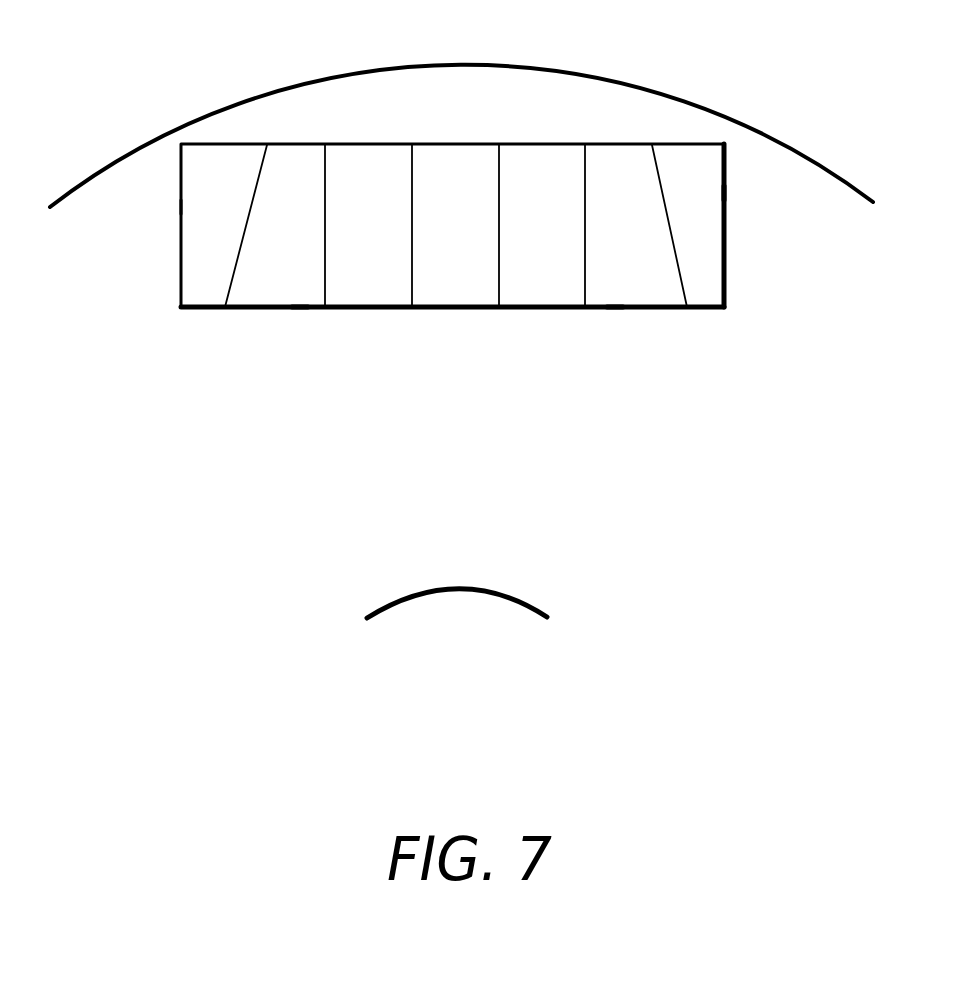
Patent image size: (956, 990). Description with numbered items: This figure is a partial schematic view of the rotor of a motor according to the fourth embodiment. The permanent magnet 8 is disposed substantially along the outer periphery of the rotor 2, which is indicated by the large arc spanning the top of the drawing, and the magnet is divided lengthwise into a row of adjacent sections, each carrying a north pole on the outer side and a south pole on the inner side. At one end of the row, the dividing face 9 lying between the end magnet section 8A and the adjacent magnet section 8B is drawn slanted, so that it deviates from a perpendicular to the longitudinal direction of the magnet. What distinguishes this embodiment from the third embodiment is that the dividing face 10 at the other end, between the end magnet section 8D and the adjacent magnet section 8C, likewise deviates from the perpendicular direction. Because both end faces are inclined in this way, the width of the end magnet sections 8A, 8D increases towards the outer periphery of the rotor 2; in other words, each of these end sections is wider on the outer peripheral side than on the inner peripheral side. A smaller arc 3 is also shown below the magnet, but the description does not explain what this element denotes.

The rotor 2 is at (352, 75).
The permanent magnet 8 is at (448, 144).
The magnet section 8A is at (181, 207).
The magnet section 8B is at (300, 308).
The magnet section 8C is at (615, 308).
The magnet section 8D is at (727, 193).
The dividing face 9 is at (238, 263).
The dividing face 10 is at (681, 285).
The rotor 3 is at (508, 597).